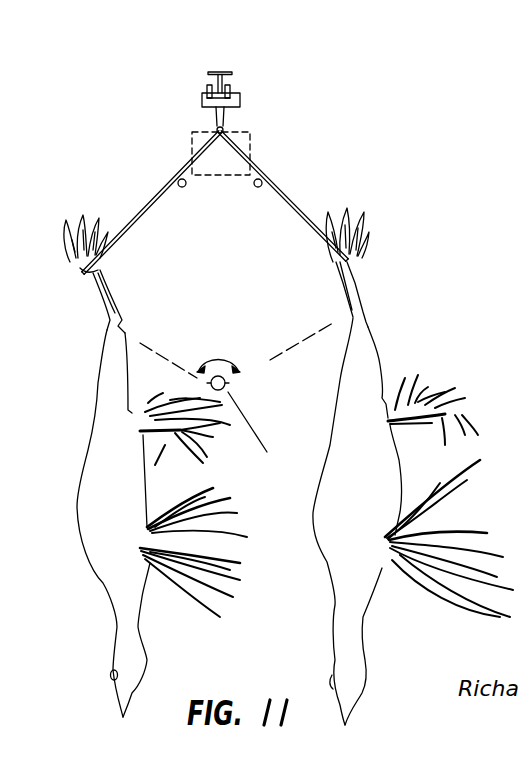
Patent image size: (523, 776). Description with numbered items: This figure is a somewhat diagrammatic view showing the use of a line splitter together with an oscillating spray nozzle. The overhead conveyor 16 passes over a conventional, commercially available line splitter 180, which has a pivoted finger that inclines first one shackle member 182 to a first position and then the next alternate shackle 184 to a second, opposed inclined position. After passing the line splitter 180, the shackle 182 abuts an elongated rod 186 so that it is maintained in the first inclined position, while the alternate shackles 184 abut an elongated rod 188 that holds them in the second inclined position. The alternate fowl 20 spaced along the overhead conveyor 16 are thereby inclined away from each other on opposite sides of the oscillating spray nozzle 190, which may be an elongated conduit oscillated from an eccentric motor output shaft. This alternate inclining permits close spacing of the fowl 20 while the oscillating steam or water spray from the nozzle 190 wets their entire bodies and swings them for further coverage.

The overhead conveyor 16 is at (217, 66).
The line splitter 180 is at (252, 152).
The shackle member 182 is at (164, 193).
The alternate shackle 184 is at (276, 183).
The elongated rod 186 is at (181, 187).
The elongated rod 188 is at (258, 187).
The oscillating spray nozzle 190 is at (228, 383).
The fowl 20 is at (120, 508).